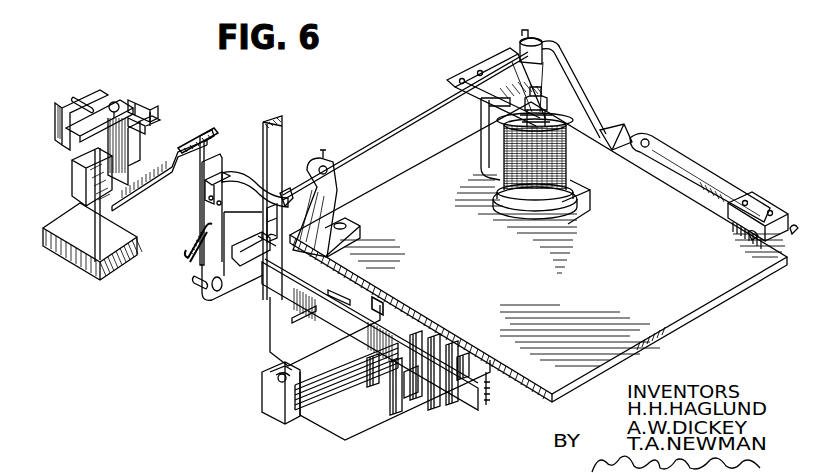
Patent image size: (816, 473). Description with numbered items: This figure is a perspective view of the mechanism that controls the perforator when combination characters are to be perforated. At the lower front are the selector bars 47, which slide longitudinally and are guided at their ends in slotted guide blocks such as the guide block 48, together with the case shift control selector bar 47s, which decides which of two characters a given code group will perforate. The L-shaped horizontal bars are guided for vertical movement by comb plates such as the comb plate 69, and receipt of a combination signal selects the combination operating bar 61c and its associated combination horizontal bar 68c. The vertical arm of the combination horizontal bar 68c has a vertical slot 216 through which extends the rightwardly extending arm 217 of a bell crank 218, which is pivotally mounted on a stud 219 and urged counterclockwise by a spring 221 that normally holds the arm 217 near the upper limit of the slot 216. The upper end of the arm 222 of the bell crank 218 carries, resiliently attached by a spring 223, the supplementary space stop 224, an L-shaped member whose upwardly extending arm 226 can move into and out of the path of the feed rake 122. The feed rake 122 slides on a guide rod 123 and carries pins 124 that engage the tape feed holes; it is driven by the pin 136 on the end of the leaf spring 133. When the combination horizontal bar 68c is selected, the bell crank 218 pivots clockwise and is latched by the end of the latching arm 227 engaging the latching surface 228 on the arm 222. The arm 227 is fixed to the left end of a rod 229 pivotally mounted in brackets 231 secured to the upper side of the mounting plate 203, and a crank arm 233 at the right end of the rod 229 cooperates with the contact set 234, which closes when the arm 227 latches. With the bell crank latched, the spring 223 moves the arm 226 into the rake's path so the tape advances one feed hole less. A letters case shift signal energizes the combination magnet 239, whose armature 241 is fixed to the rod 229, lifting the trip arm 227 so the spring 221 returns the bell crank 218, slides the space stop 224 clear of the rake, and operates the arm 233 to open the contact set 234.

The mounting plate 203 is at (402, 182).
The combination magnet 239 is at (480, 126).
The armature 241 is at (472, 74).
The rod 229 is at (296, 185).
The brackets 231 is at (338, 200).
The crank arm 233 is at (583, 94).
The contact set 234 is at (664, 190).
The leaf spring 133 is at (64, 138).
The guide rod 123 is at (80, 96).
The pin 136 is at (115, 101).
The pins 124 is at (146, 110).
The feed rake 122 is at (160, 116).
The upwardly extending arm 226 is at (72, 184).
The supplementary space stop 224 is at (152, 176).
The spring 223 is at (198, 142).
The arm 222 is at (216, 150).
The latching surface 228 is at (213, 196).
The latching arm 227 is at (258, 181).
The spring 221 is at (188, 253).
The bell crank 218 is at (217, 309).
The stud 219 is at (193, 282).
The vertical slot 216 is at (268, 224).
The rightwardly extending arm 217 is at (260, 235).
The combination horizontal bar 68c is at (284, 132).
The combination operating bar 61c is at (362, 340).
The comb plate 69 is at (270, 352).
The case shift control selector bar 47s is at (408, 430).
The selector bars 47 is at (318, 408).
The slotted guide block 48 is at (322, 440).